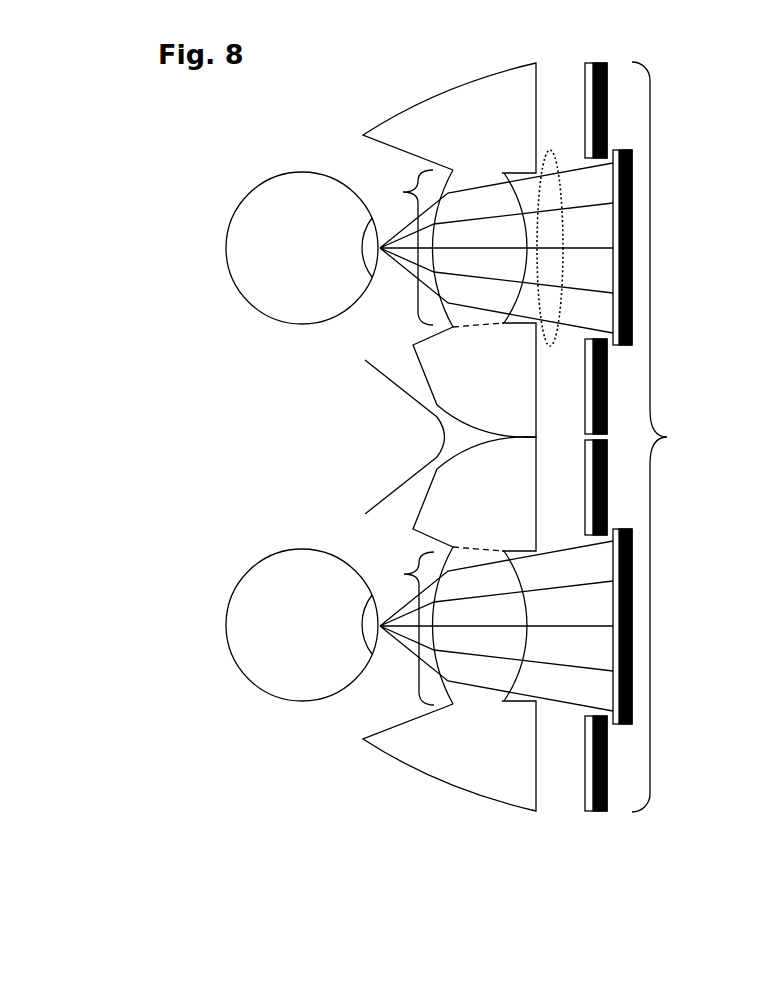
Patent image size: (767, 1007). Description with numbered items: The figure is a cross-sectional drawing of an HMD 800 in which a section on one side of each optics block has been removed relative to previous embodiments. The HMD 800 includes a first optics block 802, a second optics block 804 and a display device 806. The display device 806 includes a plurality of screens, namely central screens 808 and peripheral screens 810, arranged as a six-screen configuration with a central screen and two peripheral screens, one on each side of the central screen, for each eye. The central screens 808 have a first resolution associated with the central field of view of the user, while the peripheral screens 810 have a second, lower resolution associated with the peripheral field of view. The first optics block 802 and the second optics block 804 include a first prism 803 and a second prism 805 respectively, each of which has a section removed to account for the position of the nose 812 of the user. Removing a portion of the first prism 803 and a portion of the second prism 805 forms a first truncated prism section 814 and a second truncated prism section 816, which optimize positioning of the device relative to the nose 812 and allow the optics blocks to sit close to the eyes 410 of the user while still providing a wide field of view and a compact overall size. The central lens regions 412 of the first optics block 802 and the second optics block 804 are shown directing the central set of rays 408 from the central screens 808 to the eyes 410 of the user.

The HMD 800 is at (145, 413).
The first optics block 802 is at (398, 105).
The first prism 803 is at (508, 159).
The second optics block 804 is at (365, 775).
The second prism 805 is at (502, 741).
The display device 806 is at (681, 437).
The central screens 808 is at (632, 213).
The peripheral screens 810 is at (607, 105).
The nose 812 is at (365, 452).
The first truncated prism section 814 is at (525, 354).
The second truncated prism section 816 is at (517, 542).
The central set of light rays 408 is at (559, 186).
The eye 410 is at (292, 219).
The central lens region 412 is at (395, 433).